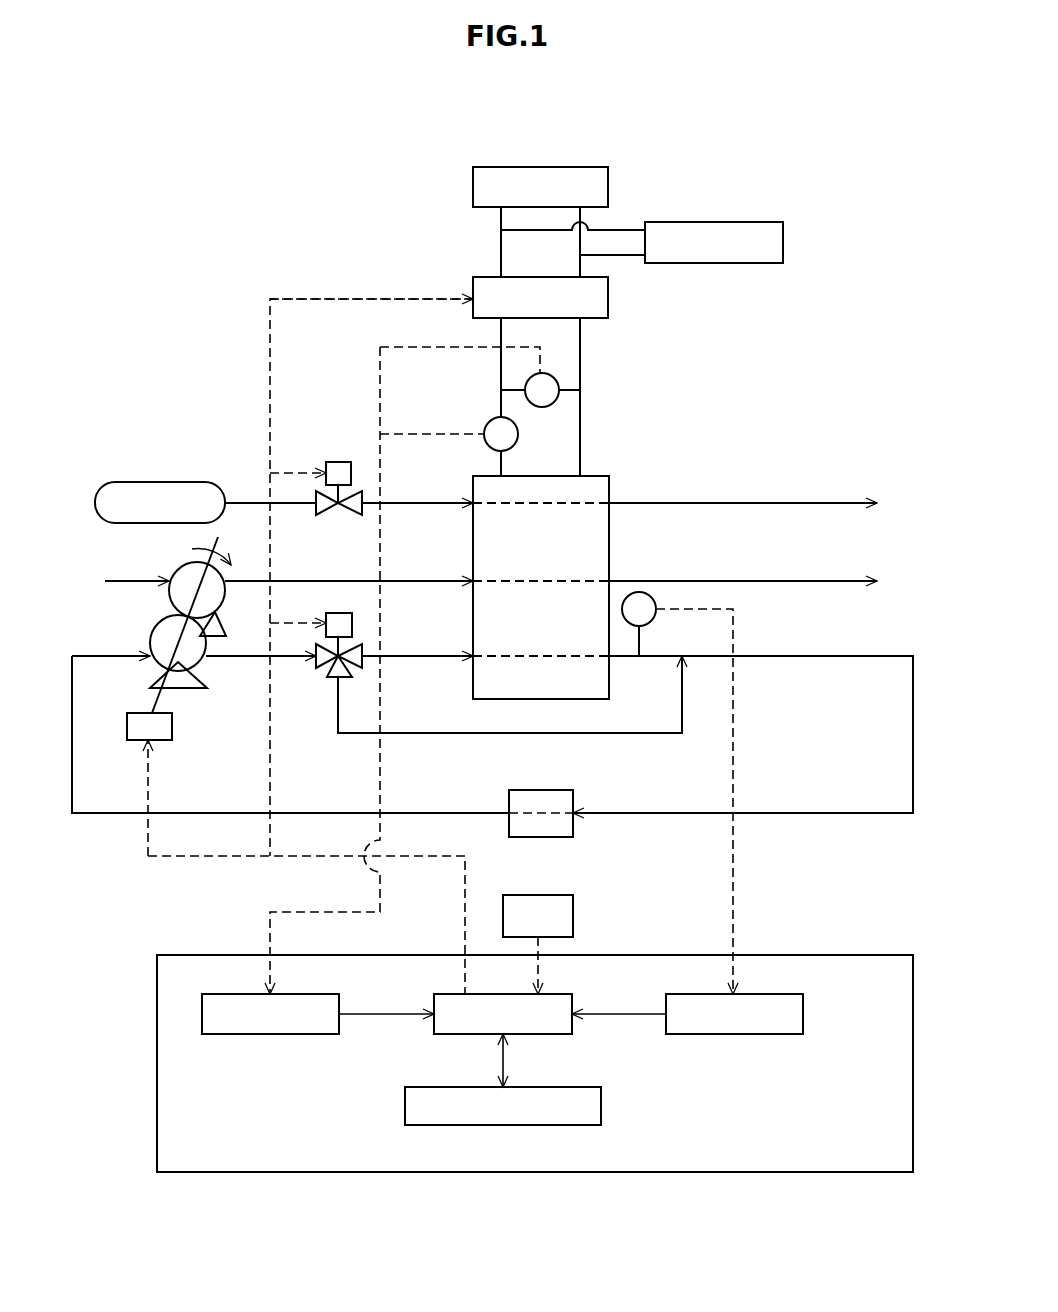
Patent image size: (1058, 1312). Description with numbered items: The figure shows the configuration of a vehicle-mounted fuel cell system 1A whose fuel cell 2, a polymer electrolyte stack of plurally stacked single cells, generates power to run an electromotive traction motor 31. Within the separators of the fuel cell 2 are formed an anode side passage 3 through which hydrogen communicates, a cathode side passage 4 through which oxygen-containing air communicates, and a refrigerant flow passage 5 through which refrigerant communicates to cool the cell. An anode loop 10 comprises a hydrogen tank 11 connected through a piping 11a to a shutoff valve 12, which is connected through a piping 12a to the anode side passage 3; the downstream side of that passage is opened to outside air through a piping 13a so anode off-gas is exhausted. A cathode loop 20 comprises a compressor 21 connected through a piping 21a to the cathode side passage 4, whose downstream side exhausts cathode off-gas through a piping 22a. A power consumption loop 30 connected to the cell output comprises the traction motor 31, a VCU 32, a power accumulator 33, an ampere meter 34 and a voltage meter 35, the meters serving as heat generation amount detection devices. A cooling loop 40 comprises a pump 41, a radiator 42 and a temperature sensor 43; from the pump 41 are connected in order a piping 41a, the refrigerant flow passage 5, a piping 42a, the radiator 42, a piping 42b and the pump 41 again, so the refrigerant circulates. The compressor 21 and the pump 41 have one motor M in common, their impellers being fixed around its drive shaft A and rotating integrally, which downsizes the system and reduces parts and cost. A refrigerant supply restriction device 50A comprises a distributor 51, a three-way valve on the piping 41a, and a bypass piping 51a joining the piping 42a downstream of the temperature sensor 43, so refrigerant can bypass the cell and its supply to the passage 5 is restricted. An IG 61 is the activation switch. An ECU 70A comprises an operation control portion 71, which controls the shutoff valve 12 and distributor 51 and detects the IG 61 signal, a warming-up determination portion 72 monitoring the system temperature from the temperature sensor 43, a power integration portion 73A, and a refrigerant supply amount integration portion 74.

The fuel cell system 1A is at (188, 196).
The fuel cell 2 is at (650, 478).
The anode side passage 3 is at (500, 506).
The cathode side passage 4 is at (566, 580).
The refrigerant flow passage 5 is at (515, 650).
The anode loop 10 is at (137, 435).
The hydrogen tank 11 is at (183, 482).
The piping 11a is at (290, 505).
The shutoff valve 12 is at (338, 462).
The piping 12a is at (420, 505).
The piping 13a is at (730, 505).
The cathode loop 20 is at (166, 568).
The compressor 21 is at (170, 606).
The piping 21a is at (421, 583).
The piping 22a is at (814, 581).
The power consumption loop 30 is at (425, 252).
The traction motor 31 is at (546, 167).
The VCU 32 is at (609, 299).
The power accumulator 33 is at (724, 222).
The ampere meter 34 is at (518, 434).
The voltage meter 35 is at (559, 385).
The cooling loop 40 is at (238, 676).
The pump 41 is at (154, 665).
The piping 41a is at (290, 658).
The radiator 42 is at (555, 838).
The piping 42a is at (848, 658).
The piping 42b is at (106, 814).
The temperature sensor 43 is at (650, 622).
The refrigerant supply restriction device 50A is at (475, 736).
The distributor 51 is at (340, 613).
The piping 51a is at (627, 735).
The IG 61 is at (573, 913).
The ECU 70A is at (824, 955).
The operation control portion 71 is at (562, 994).
The warming-up determination portion 72 is at (690, 1035).
The power integration portion 73A is at (237, 1035).
The refrigerant supply amount integration portion 74 is at (601, 1103).
The drive shaft A is at (150, 700).
The motor M is at (158, 742).